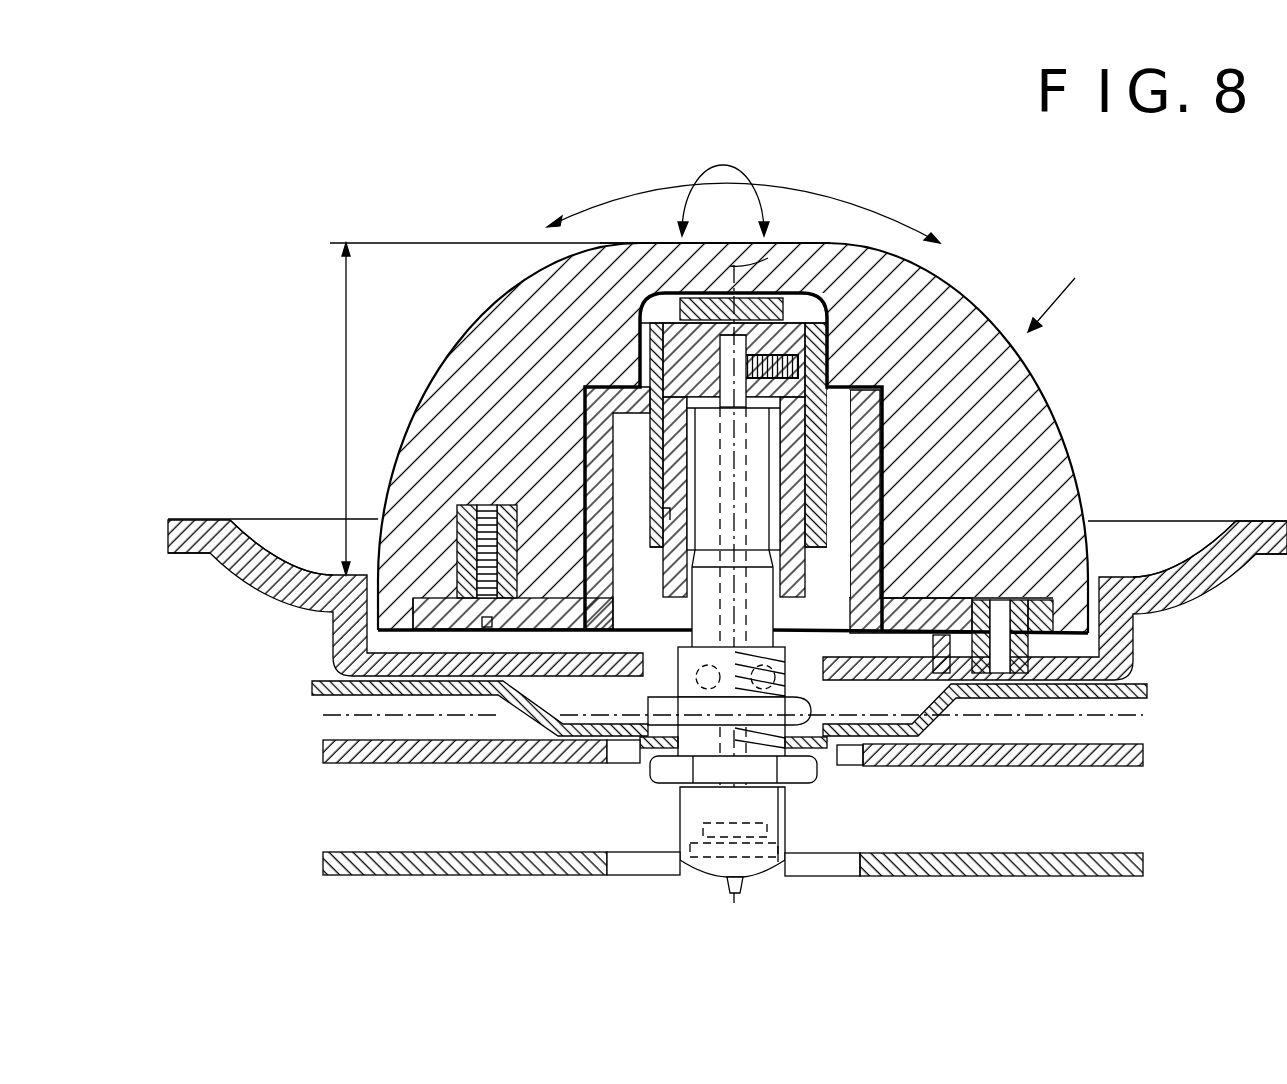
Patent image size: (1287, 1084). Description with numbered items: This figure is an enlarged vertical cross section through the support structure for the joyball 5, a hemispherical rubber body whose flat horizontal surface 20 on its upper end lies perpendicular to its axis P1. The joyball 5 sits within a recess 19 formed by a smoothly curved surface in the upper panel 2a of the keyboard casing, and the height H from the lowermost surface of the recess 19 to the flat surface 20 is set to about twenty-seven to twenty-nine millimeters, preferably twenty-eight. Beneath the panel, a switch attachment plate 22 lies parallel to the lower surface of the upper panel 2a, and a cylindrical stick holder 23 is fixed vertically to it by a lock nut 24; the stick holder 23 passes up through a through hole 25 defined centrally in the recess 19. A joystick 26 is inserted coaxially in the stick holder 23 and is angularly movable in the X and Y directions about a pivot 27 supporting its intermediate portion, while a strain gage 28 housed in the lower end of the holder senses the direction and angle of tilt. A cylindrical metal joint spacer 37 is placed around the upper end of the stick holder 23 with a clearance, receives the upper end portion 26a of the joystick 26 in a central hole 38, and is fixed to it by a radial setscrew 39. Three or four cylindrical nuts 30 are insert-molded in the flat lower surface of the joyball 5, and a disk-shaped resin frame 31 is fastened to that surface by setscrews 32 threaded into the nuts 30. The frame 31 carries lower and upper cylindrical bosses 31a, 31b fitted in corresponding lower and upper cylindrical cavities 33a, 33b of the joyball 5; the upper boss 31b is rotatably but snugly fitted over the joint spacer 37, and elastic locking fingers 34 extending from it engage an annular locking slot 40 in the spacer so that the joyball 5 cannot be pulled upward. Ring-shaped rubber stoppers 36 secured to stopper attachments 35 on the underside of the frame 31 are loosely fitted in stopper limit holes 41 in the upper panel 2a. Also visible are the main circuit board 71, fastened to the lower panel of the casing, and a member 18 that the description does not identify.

The upper panel 2a is at (203, 520).
The joyball 5 is at (1062, 293).
The lower plate 18 is at (360, 762).
The recess 19 is at (323, 575).
The flat horizontal surface 20 is at (664, 243).
The switch attachment plate 22 is at (843, 745).
The stick holder 23 is at (690, 613).
The lock nut 24 is at (807, 777).
The through hole 25 is at (867, 745).
The joystick 26 is at (700, 440).
The upper end portion 26a is at (745, 350).
The pivot 27 is at (790, 650).
The strain gage 28 is at (717, 870).
The cylindrical nuts 30 is at (460, 523).
The frame 31 is at (965, 587).
The lower cylindrical boss 31a is at (875, 405).
The upper cylindrical boss 31b is at (822, 345).
The setscrews 32 is at (488, 628).
The lower cylindrical cavity 33a is at (880, 443).
The upper cylindrical cavity 33b is at (830, 320).
The locking fingers 34 is at (664, 515).
The stopper attachments 35 is at (1002, 672).
The stoppers 36 is at (1017, 672).
The joint spacer 37 is at (690, 345).
The central hole 38 is at (710, 335).
The radial setscrew 39 is at (800, 363).
The annular locking slot 40 is at (734, 507).
The stopper limit holes 41 is at (1037, 672).
The main circuit board 71 is at (465, 876).
The height H is at (346, 397).
The X-axis direction X is at (863, 205).
The Y-axis direction Y is at (728, 165).
The axis P1 is at (768, 258).